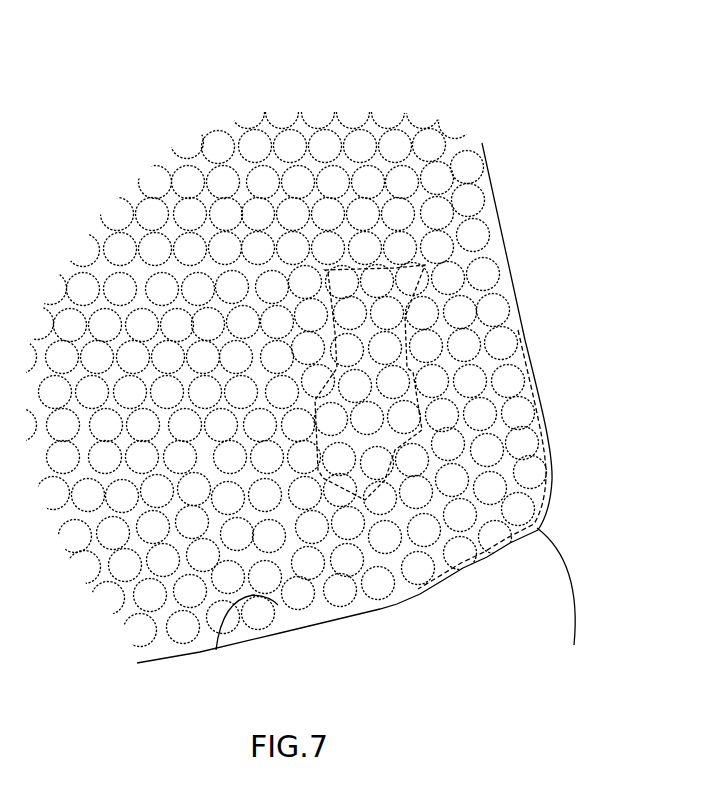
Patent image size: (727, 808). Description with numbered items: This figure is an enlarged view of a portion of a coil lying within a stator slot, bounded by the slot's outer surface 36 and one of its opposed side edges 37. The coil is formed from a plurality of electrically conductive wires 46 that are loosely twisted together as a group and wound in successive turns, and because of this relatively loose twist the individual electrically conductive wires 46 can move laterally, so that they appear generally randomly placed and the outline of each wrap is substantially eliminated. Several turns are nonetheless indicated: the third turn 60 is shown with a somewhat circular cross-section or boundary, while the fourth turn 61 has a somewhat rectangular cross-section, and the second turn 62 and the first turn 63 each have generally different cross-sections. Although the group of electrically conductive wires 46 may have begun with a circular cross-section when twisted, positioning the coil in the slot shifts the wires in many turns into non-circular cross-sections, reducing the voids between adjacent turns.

The electrically conductive wires 46 is at (290, 147).
The outer surface 36 is at (262, 597).
The side edges 37 is at (513, 285).
The third turn 60 is at (428, 387).
The fourth turn 61 is at (443, 250).
The second turn 62 is at (437, 585).
The first turn 63 is at (560, 599).